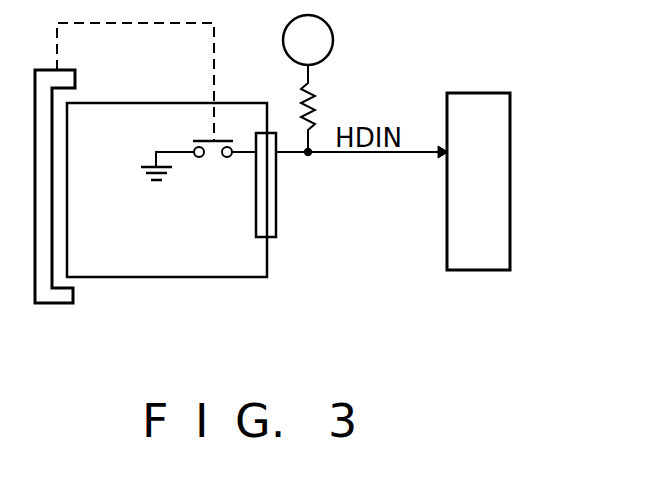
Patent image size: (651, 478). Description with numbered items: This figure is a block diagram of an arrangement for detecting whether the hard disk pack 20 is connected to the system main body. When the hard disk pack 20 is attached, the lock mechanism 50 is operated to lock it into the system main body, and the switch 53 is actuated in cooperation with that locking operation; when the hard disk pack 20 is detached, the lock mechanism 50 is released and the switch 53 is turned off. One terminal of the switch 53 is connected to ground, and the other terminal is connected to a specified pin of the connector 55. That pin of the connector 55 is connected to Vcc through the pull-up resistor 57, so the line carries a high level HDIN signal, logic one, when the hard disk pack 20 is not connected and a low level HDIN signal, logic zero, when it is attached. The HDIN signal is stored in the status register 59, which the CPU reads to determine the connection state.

The hard disk pack 20 is at (188, 277).
The lock mechanism 50 is at (73, 303).
The switch 53 is at (199, 138).
The connector 55 is at (276, 220).
The pull-up resistor 57 is at (310, 112).
The status register 59 is at (492, 270).